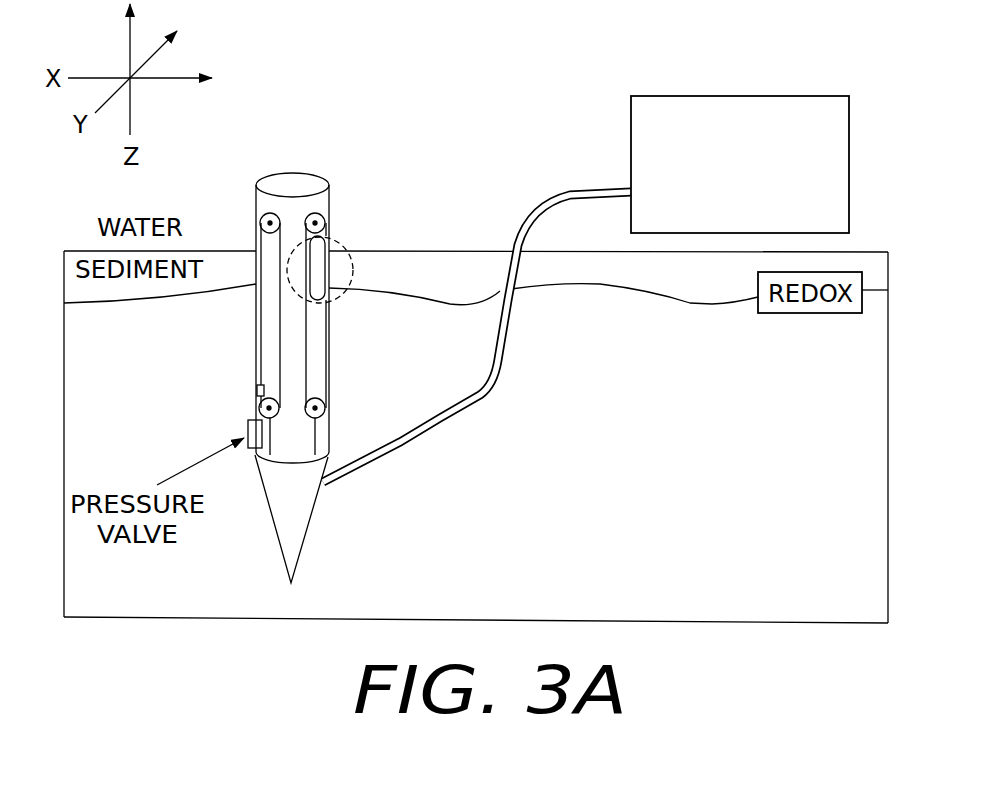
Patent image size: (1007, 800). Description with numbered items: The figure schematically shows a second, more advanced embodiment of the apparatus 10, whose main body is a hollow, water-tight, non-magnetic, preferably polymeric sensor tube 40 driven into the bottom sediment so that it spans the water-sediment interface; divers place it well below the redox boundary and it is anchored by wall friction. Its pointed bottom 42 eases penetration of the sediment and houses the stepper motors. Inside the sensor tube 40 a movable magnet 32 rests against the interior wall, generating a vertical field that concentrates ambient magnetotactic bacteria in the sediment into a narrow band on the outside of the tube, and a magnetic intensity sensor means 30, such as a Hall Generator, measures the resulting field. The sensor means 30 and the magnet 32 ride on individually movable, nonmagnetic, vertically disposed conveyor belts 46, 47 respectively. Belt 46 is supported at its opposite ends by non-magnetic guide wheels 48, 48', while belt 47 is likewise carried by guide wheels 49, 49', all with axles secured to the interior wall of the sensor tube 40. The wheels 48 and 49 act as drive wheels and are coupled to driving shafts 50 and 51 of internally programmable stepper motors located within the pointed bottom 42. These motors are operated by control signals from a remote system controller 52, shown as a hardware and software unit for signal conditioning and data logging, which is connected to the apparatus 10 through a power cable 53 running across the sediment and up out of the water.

The apparatus 10 is at (434, 191).
The sensor tube 40 is at (252, 191).
The pointed bottom 42 is at (302, 536).
The conveyor belt 46 is at (327, 372).
The conveyor belt 47 is at (259, 333).
The guide wheel 48 is at (342, 399).
The guide wheel 48' is at (347, 208).
The guide wheel 49 is at (236, 409).
The guide wheel 49' is at (240, 214).
The driving shaft 50 is at (317, 440).
The driving shaft 51 is at (257, 455).
The magnet 32 is at (325, 298).
The magnetic intensity sensor means 30 is at (252, 389).
The remote system controller 52 is at (621, 104).
The power cable 53 is at (497, 378).